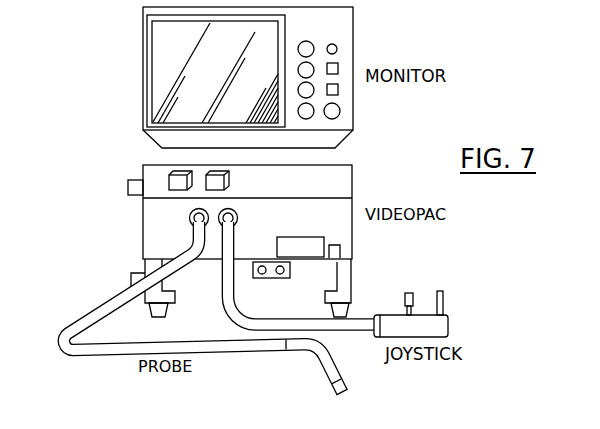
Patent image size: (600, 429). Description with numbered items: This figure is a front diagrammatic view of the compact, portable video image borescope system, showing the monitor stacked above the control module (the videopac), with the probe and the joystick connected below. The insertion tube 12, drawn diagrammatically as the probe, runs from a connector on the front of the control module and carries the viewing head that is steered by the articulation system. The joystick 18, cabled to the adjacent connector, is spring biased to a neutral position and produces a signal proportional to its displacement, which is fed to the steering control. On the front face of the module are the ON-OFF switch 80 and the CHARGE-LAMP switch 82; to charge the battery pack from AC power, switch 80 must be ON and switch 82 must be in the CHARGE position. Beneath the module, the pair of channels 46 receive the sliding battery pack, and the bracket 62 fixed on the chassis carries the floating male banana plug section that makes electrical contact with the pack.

The insertion tube 12 is at (83, 308).
The joystick 18 is at (450, 321).
The channels 46 is at (341, 284).
The bracket 62 is at (261, 279).
The ON-OFF switch 80 is at (178, 179).
The CHARGE-LAMP switch 82 is at (229, 178).